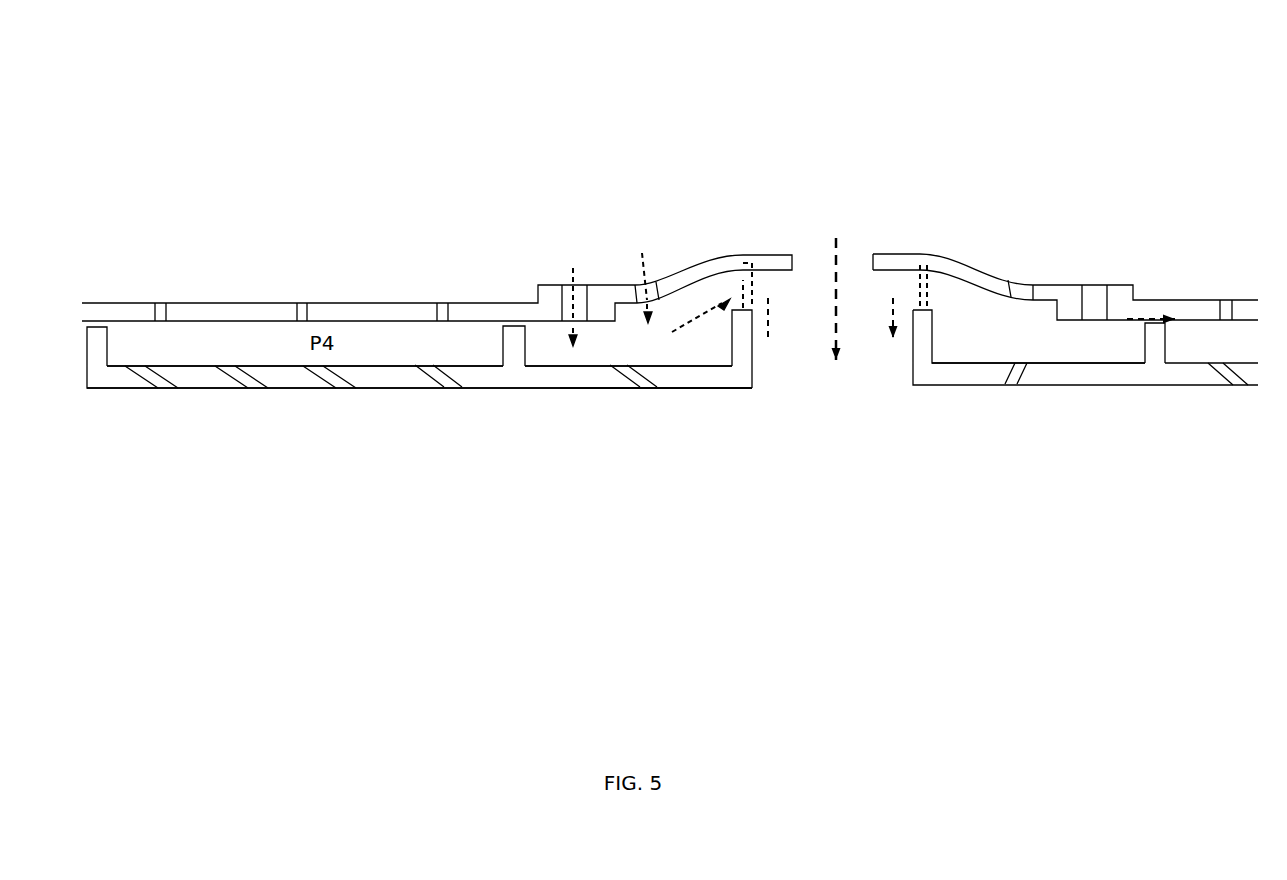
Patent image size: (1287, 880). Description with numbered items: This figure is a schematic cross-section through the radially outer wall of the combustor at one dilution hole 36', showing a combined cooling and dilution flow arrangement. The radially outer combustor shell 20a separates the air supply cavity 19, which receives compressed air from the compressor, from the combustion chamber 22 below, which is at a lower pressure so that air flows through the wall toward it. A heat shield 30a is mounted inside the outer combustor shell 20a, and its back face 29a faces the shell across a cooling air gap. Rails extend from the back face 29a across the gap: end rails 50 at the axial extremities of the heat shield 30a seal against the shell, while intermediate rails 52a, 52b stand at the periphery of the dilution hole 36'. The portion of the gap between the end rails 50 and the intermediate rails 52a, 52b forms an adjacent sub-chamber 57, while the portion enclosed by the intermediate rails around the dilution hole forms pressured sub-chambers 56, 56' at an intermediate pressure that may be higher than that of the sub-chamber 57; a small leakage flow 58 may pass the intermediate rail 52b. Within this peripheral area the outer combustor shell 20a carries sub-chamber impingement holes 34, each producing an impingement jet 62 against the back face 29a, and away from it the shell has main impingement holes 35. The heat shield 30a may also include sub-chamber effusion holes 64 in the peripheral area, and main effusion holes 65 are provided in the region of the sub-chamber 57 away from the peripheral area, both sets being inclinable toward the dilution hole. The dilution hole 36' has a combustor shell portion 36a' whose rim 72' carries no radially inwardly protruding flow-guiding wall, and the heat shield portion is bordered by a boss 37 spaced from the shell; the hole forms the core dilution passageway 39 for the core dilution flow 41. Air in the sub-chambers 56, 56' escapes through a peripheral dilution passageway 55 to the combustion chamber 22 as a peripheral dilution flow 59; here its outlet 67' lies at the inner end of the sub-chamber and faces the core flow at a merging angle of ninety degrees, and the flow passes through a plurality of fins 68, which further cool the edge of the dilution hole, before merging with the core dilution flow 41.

The air supply cavity 19 is at (567, 53).
The combustion chamber 22 is at (617, 663).
The radially outer combustor shell 20a is at (475, 312).
The back face 29a is at (385, 365).
The heat shield 30a is at (177, 375).
The sub-chamber impingement holes 34 is at (637, 282).
The main impingement holes 35 is at (436, 301).
The dilution hole 36' is at (723, 189).
The combustor shell portion 36a' is at (724, 198).
The boss 37 is at (916, 323).
The core dilution passageway 39 is at (800, 337).
The core dilution flow 41 is at (853, 299).
The end rails 50 is at (96, 348).
The intermediate rail 52a is at (513, 347).
The intermediate rail 52b is at (1155, 343).
The peripheral dilution passageway 55 is at (738, 295).
The pressured sub-chamber 56 is at (628, 456).
The pressured sub-chamber 56' is at (1038, 403).
The adjacent sub-chamber 57 is at (1211, 344).
The leakage flow 58 is at (1158, 318).
The peripheral dilution flow 59 is at (834, 337).
The impingement jet 62 is at (634, 325).
The sub-chamber effusion holes 64 is at (650, 390).
The main effusion holes 65 is at (343, 391).
The outlet 67' is at (976, 219).
The fins 68 is at (740, 270).
The rim 72' is at (900, 165).